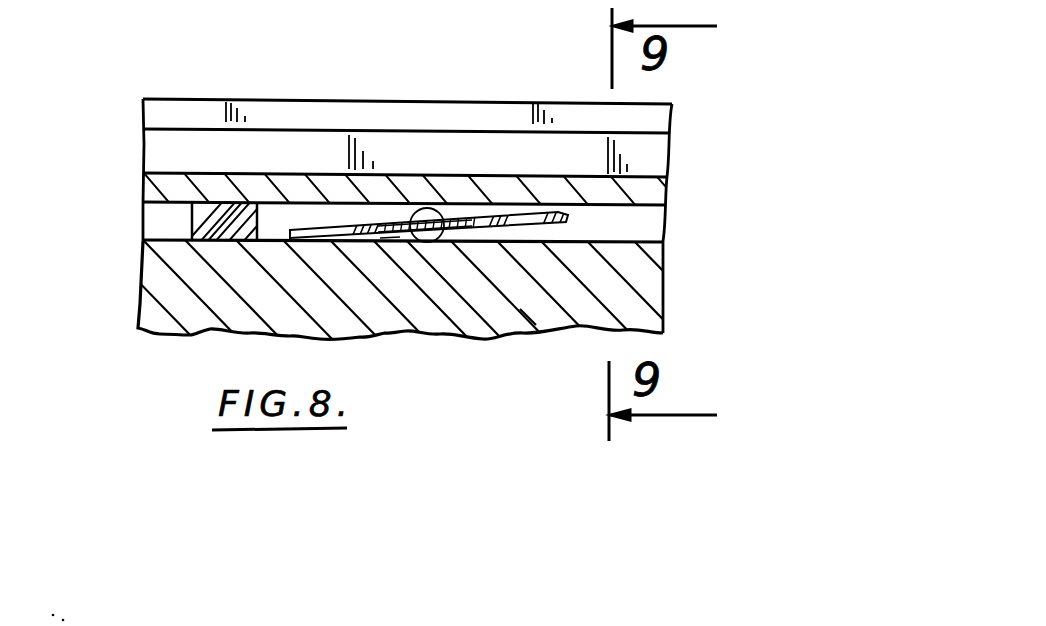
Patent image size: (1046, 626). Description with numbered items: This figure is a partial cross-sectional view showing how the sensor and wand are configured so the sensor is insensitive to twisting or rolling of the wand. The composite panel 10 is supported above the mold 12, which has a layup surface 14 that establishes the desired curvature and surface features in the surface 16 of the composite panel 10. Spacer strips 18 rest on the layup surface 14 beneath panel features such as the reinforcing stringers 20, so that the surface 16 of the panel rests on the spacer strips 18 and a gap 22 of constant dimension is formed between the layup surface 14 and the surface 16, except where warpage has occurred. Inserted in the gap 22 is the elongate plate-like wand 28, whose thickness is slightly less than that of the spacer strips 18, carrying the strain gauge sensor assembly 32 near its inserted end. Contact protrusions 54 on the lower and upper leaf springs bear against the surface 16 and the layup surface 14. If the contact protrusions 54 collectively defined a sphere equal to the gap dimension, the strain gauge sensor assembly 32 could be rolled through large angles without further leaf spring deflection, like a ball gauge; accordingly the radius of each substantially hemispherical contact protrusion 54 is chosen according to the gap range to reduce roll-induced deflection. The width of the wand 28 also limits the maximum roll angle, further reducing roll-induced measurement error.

The composite panel 10 is at (643, 156).
The mold 12 is at (628, 305).
The layup surface 14 is at (636, 237).
The surface of composite panel 16 is at (668, 203).
The spacer strips 18 is at (192, 208).
The reinforcing stringers 20 is at (427, 108).
The gap 22 is at (279, 217).
The wand 28 is at (546, 207).
The strain gauge sensor assembly 32 is at (392, 237).
The contact protrusions 54 is at (433, 198).